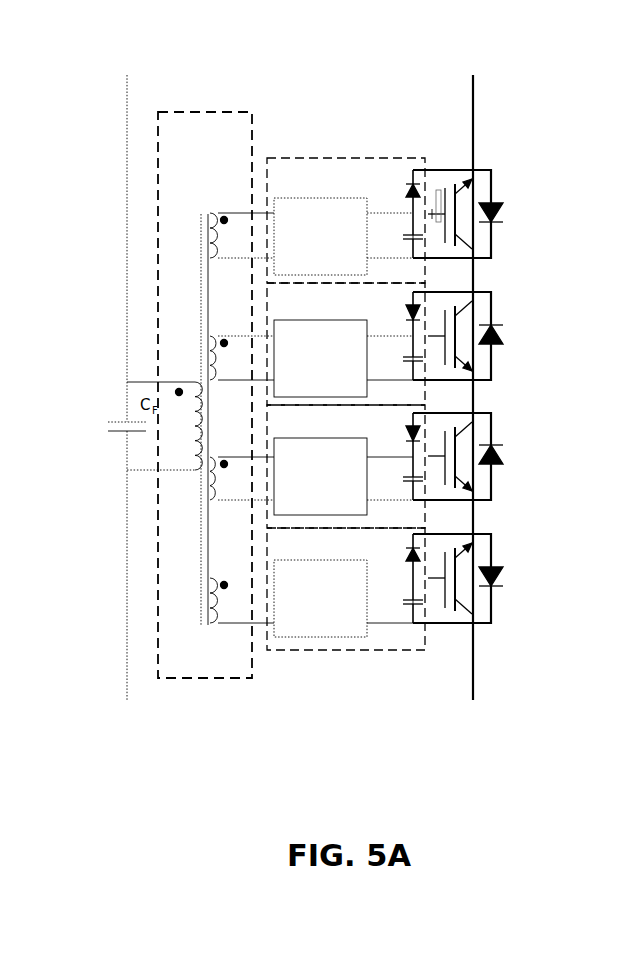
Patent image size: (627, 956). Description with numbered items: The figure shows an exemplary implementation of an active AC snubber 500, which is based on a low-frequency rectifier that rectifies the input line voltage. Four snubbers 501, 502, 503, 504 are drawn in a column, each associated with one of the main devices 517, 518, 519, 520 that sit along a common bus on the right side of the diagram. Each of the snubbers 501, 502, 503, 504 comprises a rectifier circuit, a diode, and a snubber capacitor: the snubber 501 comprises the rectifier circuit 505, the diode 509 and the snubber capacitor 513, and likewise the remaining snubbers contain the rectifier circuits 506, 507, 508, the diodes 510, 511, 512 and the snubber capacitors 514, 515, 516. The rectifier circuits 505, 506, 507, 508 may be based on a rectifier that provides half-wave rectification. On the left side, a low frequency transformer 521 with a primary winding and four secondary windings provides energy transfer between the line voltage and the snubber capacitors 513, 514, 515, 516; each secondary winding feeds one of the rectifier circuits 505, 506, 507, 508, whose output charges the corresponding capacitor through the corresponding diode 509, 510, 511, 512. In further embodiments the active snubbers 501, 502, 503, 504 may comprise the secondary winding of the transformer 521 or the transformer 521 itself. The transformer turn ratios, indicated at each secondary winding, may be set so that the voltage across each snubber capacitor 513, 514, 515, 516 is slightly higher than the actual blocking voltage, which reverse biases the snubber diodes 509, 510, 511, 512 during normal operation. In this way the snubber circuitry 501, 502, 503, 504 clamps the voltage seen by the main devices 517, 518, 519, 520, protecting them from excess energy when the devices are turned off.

The active AC snubber 500 is at (254, 59).
The snubber 501 is at (306, 181).
The snubber 502 is at (306, 306).
The snubber 503 is at (306, 428).
The snubber 504 is at (306, 551).
The rectifier circuit 505 is at (306, 271).
The rectifier circuit 506 is at (306, 393).
The rectifier circuit 507 is at (306, 511).
The rectifier circuit 508 is at (306, 633).
The snubber diode 509 is at (410, 184).
The snubber diode 510 is at (410, 306).
The snubber diode 511 is at (410, 427).
The snubber diode 512 is at (410, 548).
The snubber capacitor 513 is at (416, 241).
The snubber capacitor 514 is at (416, 363).
The snubber capacitor 515 is at (416, 483).
The snubber capacitor 516 is at (416, 606).
The main device 517 is at (492, 178).
The main device 518 is at (492, 300).
The main device 519 is at (492, 421).
The main device 520 is at (492, 542).
The low frequency transformer 521 is at (219, 146).